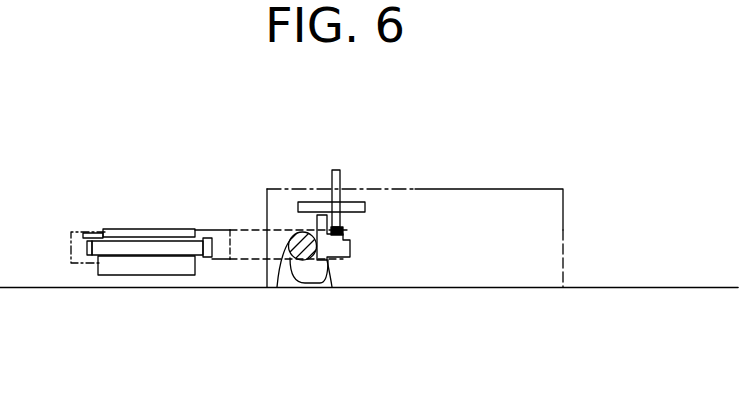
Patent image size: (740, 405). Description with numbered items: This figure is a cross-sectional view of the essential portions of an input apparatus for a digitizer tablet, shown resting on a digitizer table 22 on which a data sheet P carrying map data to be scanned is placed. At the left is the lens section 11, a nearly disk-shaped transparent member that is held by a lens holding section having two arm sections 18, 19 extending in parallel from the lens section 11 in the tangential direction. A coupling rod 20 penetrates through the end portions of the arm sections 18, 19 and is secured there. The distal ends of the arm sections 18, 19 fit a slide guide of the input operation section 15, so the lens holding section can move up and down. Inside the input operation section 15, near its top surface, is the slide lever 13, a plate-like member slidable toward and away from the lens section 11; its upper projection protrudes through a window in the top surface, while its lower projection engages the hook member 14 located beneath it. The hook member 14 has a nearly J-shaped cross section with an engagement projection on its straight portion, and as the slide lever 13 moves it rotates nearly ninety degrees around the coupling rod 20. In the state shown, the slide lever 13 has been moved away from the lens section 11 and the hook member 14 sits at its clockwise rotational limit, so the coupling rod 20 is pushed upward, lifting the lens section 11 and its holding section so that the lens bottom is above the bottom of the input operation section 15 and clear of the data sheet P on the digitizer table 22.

The lens section 11 is at (148, 229).
The slide lever 13 is at (337, 170).
The hook member 14 is at (332, 287).
The input operation section 15 is at (565, 187).
The arm section 18 is at (238, 228).
The arm section 19 is at (238, 228).
The coupling rod 20 is at (277, 287).
The digitizer table 22 is at (602, 302).
The data sheet P is at (513, 287).